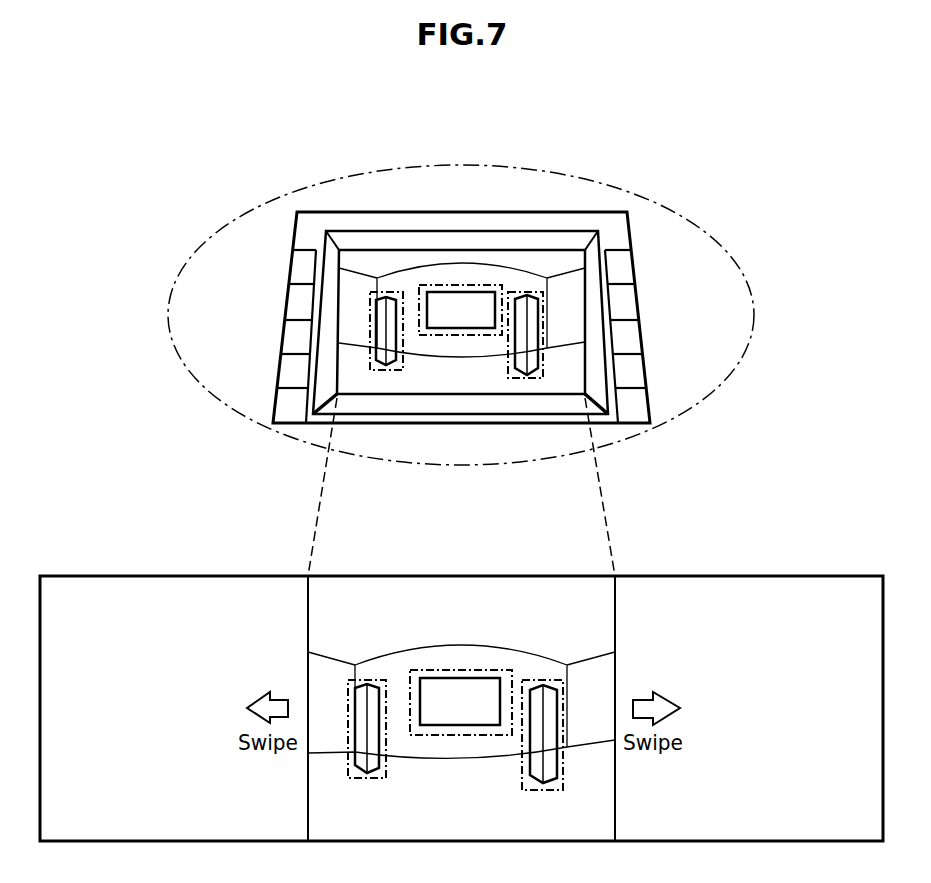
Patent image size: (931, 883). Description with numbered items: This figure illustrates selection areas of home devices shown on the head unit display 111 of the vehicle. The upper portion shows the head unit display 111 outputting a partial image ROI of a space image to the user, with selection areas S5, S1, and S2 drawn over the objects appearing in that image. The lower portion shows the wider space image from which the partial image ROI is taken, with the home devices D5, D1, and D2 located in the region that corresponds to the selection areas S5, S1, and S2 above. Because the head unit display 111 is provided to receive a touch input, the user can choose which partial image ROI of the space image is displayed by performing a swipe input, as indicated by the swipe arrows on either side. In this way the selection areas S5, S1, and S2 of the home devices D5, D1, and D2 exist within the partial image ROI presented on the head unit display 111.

The head unit display 111 is at (508, 262).
The selection area S5 is at (390, 296).
The selection area S1 is at (460, 283).
The selection area S2 is at (528, 290).
The partial image ROI is at (543, 569).
The home device D5 is at (378, 778).
The home device D1 is at (452, 725).
The home device D2 is at (552, 783).